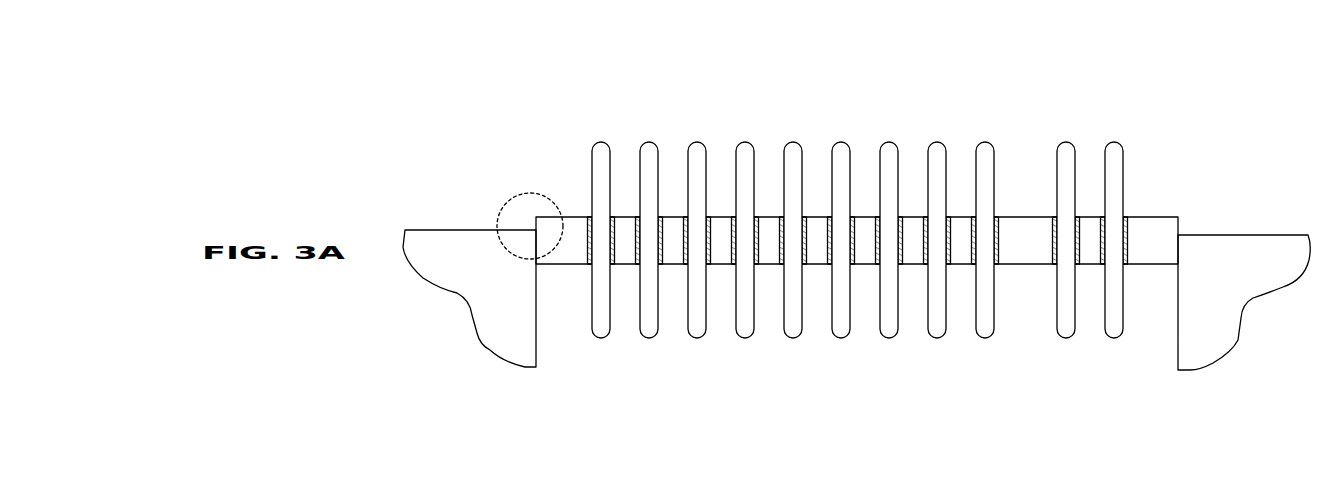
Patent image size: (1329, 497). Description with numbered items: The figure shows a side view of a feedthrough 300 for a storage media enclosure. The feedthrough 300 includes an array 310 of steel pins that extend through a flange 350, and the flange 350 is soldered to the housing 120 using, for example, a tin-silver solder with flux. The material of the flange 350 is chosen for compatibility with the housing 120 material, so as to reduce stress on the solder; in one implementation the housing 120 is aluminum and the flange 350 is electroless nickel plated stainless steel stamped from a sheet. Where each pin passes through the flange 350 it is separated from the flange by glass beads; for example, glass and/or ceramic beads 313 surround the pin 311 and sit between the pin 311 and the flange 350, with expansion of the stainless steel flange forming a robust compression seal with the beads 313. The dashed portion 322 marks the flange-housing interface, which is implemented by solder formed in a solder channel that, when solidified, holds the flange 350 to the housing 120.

The feedthrough 300 is at (853, 64).
The array of steel pins 310 is at (569, 111).
The pin 311 is at (1066, 143).
The glass and/or ceramic beads 313 is at (1057, 217).
The dashed portion 322 is at (504, 208).
The flange 350 is at (1163, 217).
The housing 120 is at (1252, 235).